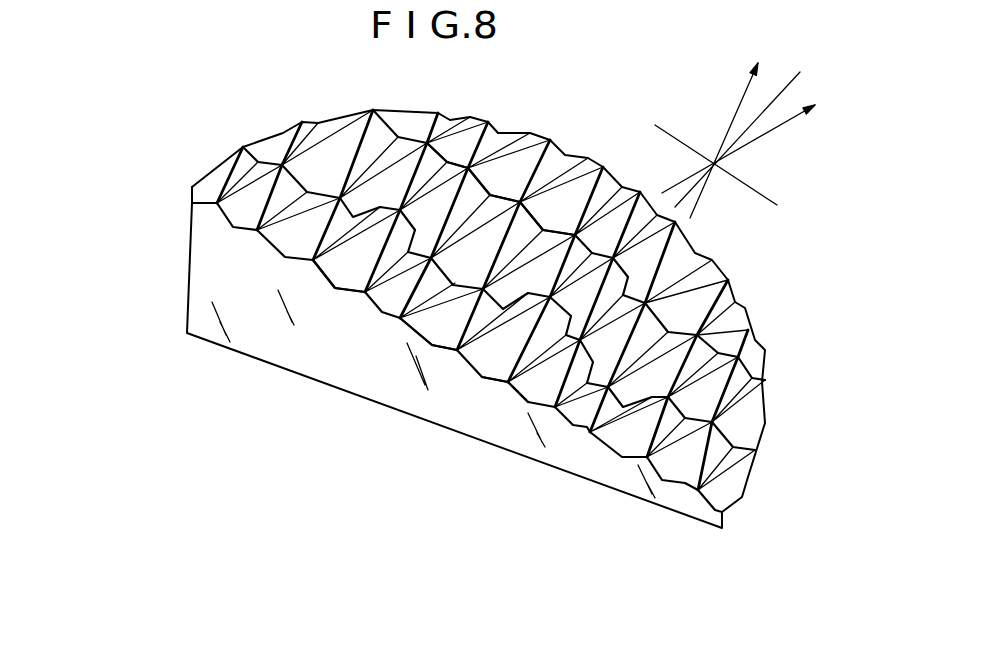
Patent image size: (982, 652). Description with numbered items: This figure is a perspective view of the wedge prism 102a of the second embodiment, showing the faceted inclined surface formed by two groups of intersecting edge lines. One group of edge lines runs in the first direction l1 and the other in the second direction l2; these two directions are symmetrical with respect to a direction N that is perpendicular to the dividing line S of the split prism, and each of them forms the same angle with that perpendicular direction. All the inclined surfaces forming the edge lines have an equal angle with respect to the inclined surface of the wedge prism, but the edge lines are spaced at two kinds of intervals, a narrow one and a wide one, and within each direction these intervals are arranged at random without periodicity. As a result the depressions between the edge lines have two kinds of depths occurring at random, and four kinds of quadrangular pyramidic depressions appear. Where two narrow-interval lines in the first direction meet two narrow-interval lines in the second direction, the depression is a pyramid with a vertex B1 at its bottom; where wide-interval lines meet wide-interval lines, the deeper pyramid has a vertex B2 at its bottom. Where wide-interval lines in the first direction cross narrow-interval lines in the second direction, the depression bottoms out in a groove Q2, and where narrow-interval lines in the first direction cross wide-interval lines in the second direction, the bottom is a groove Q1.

The wedge prism 102a is at (417, 319).
The vertex B1 is at (447, 160).
The vertex B2 is at (492, 195).
The groove Q1 is at (426, 328).
The groove Q2 is at (348, 291).
The surface normal direction N is at (747, 123).
The dividing line S is at (729, 174).
The first direction l1 is at (752, 141).
The second direction l2 is at (727, 125).